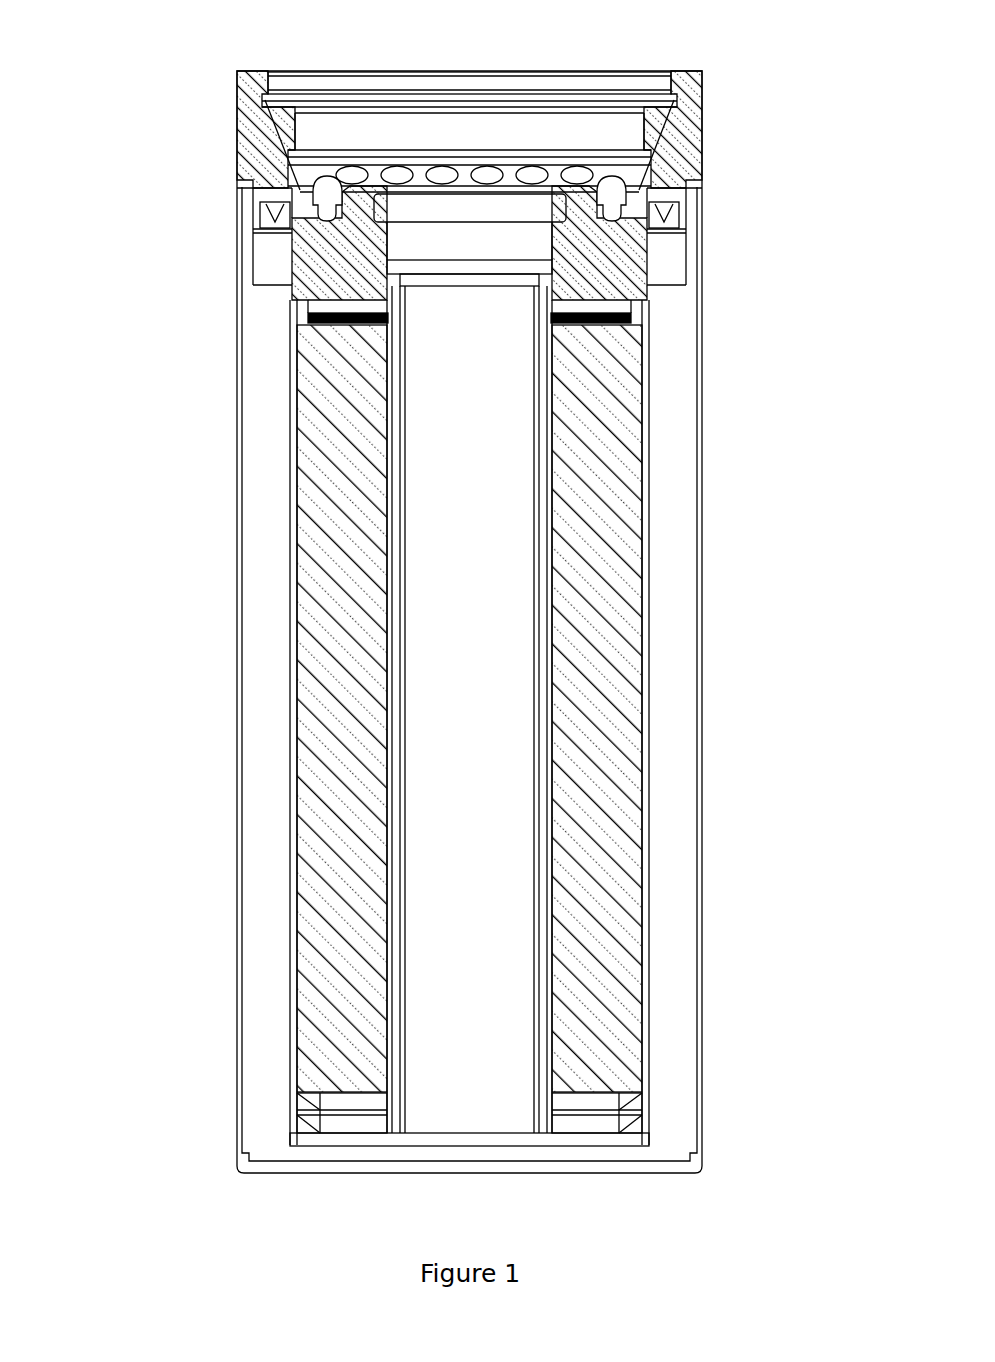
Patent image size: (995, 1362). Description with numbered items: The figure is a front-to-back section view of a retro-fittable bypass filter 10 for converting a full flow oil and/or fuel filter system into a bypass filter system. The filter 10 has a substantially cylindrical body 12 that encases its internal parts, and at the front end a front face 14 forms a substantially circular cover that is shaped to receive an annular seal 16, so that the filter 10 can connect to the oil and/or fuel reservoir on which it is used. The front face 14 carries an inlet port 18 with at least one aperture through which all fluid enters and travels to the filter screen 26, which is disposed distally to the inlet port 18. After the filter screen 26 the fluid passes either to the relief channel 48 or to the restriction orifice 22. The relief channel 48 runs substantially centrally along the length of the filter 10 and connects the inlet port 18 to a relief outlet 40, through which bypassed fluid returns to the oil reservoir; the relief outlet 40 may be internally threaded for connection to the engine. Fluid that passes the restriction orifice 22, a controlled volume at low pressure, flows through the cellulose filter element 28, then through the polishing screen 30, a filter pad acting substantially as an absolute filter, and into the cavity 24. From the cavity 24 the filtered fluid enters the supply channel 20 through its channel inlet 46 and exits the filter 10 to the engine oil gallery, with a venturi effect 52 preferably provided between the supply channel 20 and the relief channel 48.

The retro-fittable bypass filter 10 is at (116, 70).
The body 12 is at (237, 567).
The front face 14 is at (687, 73).
The annular seal 16 is at (303, 85).
The inlet port 18 is at (612, 193).
The supply channel 20 is at (385, 270).
The restriction orifice 22 is at (587, 1112).
The cavity 24 is at (615, 303).
The filter screen 26 is at (527, 1140).
The cellulose filter element 28 is at (353, 607).
The polishing screen 30 is at (632, 322).
The relief outlet 40 is at (470, 240).
The channel inlet 46 is at (385, 317).
The relief channel 48 is at (483, 612).
The venturi effect 52 is at (648, 385).